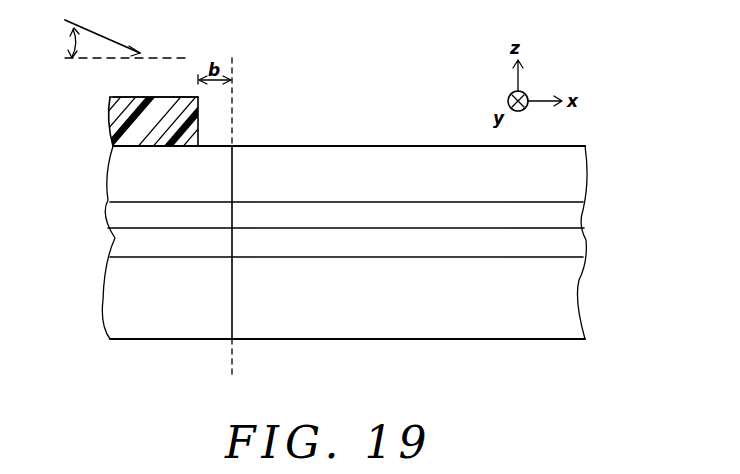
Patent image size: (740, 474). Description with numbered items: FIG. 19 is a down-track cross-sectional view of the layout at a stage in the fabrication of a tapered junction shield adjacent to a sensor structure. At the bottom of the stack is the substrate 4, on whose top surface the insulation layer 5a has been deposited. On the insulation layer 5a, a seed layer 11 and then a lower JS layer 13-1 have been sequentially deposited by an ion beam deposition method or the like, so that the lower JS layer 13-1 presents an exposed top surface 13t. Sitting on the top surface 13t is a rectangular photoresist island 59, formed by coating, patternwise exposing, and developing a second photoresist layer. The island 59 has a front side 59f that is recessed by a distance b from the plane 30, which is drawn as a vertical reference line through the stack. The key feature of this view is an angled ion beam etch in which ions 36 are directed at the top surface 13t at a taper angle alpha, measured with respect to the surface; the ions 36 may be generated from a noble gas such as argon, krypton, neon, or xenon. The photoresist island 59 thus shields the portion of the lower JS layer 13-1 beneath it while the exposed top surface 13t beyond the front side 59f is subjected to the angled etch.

The ions 36 is at (119, 38).
The plane 30 is at (234, 216).
The photoresist island 59 is at (118, 126).
The front side 59f is at (200, 104).
The top surface 13t is at (412, 146).
The lower JS layer 13-1 is at (568, 174).
The seed layer 11 is at (568, 211).
The insulation layer 5a is at (563, 237).
The substrate 4 is at (563, 289).